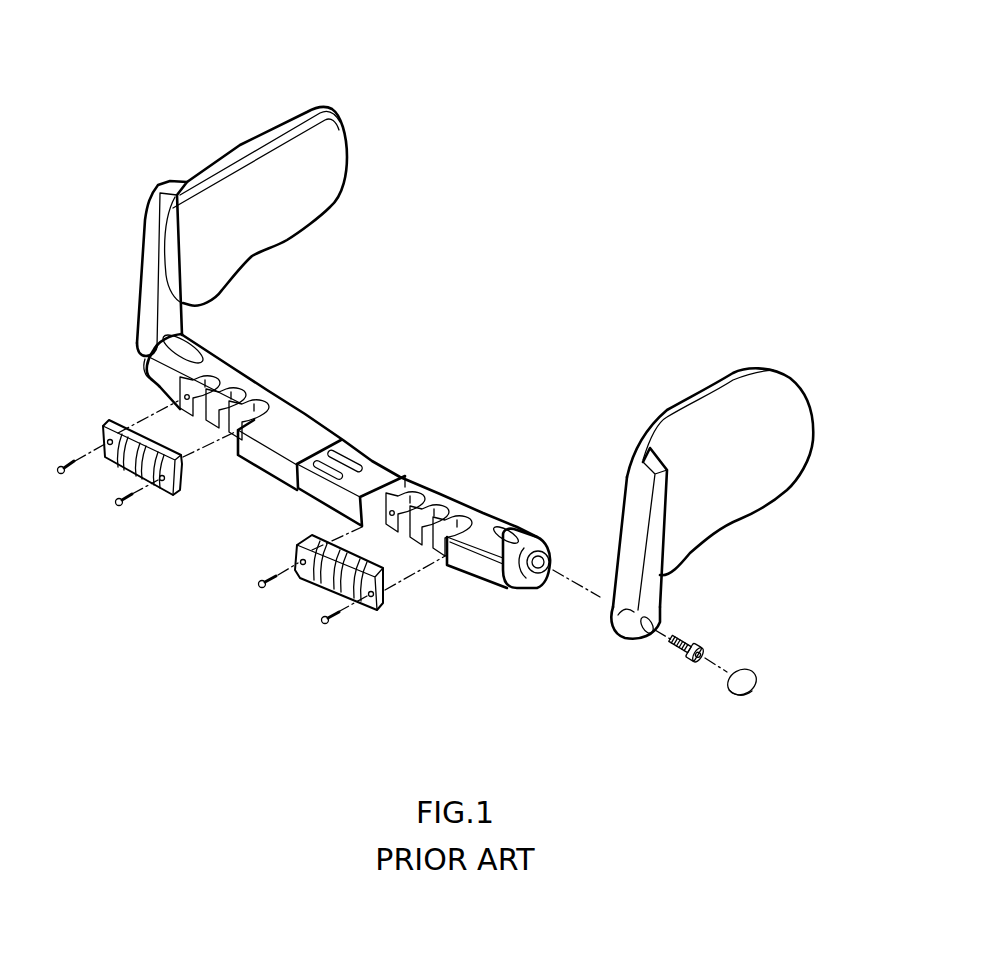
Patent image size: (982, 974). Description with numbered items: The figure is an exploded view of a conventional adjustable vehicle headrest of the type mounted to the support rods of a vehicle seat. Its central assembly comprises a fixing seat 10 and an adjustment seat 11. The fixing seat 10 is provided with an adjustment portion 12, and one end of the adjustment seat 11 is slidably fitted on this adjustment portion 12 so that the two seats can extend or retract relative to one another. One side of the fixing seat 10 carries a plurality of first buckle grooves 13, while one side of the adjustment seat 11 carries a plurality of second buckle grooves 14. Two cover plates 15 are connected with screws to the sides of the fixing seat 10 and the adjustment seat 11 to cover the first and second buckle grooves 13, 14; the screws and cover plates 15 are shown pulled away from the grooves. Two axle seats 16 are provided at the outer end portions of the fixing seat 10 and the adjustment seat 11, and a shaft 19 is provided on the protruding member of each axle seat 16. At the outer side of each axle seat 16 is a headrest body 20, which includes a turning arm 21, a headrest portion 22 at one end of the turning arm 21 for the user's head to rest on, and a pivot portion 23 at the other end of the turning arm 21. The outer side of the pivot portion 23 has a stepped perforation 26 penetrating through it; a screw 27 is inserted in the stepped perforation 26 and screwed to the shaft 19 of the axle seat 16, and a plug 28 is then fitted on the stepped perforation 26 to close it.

The fixing seat 10 is at (480, 513).
The adjustment seat 11 is at (231, 373).
The adjustment portion 12 is at (368, 470).
The first buckle grooves 13 is at (432, 507).
The second buckle grooves 14 is at (245, 402).
The cover plates 15 is at (130, 462).
The axle seats 16 is at (520, 593).
The shaft 19 is at (528, 542).
The headrest body 20 is at (233, 128).
The turning arm 21 is at (152, 290).
The headrest portion 22 is at (287, 155).
The pivot portion 23 is at (140, 353).
The stepped perforation 26 is at (658, 622).
The screw 27 is at (678, 652).
The plug 28 is at (740, 692).